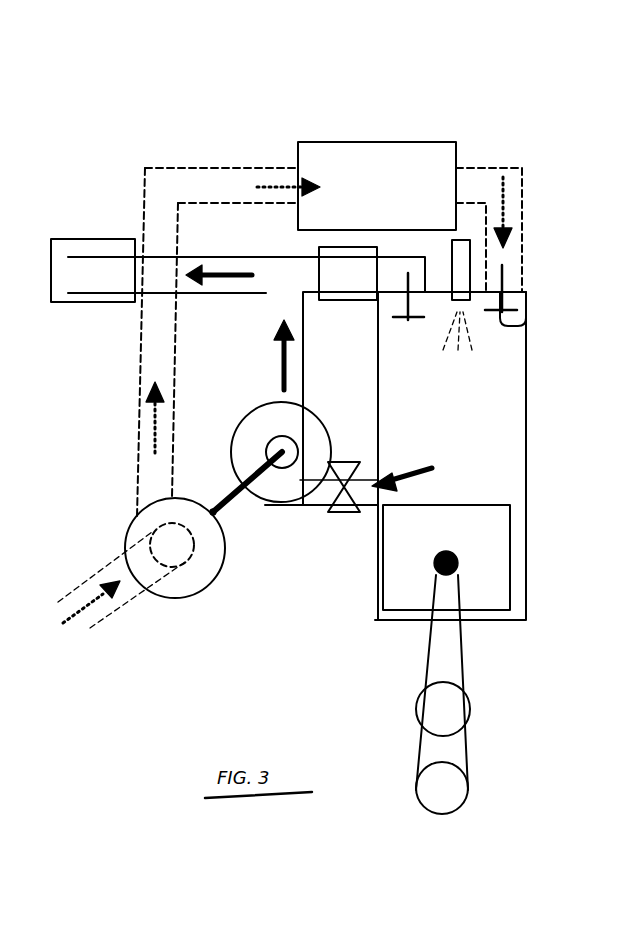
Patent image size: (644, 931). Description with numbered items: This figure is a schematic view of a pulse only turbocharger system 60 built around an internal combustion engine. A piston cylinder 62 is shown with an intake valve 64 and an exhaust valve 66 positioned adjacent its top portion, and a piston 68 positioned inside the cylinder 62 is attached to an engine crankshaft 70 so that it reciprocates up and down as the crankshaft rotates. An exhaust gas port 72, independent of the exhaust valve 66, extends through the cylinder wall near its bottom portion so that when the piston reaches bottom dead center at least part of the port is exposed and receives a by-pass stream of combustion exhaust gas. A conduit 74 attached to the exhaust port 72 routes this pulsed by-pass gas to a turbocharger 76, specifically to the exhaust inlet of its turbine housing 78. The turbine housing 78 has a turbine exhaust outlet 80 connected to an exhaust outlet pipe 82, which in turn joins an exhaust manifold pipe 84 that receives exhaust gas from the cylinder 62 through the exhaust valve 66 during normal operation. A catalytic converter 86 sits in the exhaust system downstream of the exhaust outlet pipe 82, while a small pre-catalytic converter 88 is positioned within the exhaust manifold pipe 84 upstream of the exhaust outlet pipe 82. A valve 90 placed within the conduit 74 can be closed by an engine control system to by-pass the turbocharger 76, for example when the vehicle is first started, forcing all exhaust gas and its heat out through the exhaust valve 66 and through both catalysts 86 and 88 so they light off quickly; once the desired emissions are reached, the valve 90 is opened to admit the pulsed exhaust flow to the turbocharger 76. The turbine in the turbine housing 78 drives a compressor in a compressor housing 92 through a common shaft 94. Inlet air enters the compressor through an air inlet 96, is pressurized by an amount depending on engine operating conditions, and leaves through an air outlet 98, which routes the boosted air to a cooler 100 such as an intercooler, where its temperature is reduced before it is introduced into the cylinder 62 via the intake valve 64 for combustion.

The pulse only turbocharger system 60 is at (520, 118).
The piston cylinder 62 is at (527, 385).
The intake valve 64 is at (537, 318).
The exhaust valve 66 is at (405, 332).
The piston 68 is at (460, 541).
The engine crankshaft 70 is at (458, 797).
The exhaust gas port 72 is at (393, 494).
The conduit 74 is at (363, 502).
The turbocharger 76 is at (272, 492).
The turbine housing 78 is at (292, 488).
The turbine exhaust outlet 80 is at (296, 446).
The exhaust outlet pipe 82 is at (302, 364).
The exhaust manifold pipe 84 is at (266, 270).
The catalytic converter 86 is at (60, 310).
The pre-catalytic converter 88 is at (337, 302).
The valve 90 is at (344, 462).
The compressor housing 92 is at (193, 594).
The common shaft 94 is at (220, 497).
The air inlet 96 is at (120, 604).
The air outlet 98 is at (175, 426).
The cooler 100 is at (412, 150).